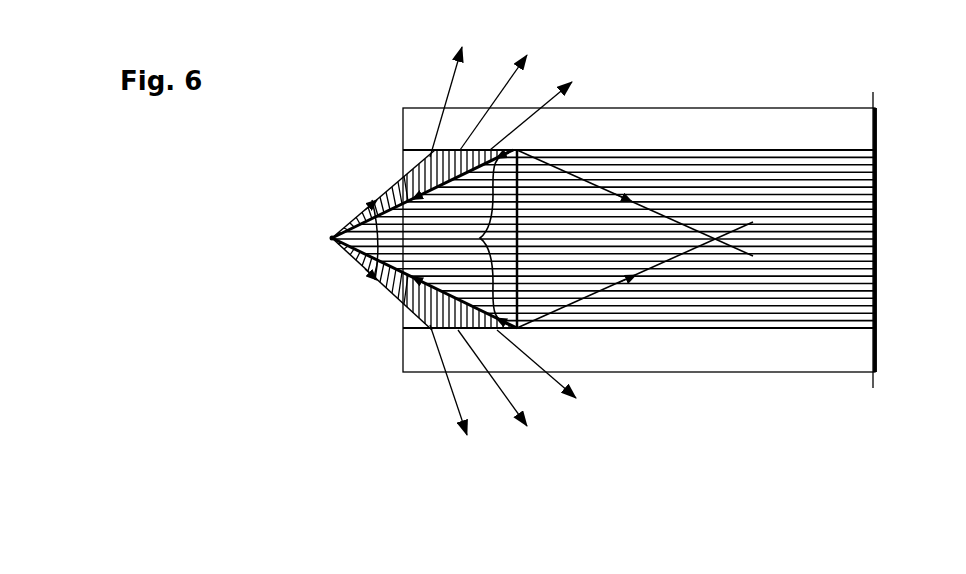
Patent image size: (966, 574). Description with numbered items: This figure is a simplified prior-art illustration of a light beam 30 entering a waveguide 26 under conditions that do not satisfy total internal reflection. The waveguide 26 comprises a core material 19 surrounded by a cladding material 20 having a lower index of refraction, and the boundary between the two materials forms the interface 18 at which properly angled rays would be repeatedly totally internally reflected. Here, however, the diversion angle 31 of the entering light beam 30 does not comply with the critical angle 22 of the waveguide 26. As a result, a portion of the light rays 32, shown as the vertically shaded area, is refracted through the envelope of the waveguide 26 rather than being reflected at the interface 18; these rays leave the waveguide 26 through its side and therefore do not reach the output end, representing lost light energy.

The interface 18 is at (738, 330).
The core material 19 is at (709, 168).
The cladding material 20 is at (660, 128).
The critical angle 22 is at (488, 238).
The waveguide 26 is at (841, 90).
The light beam 30 is at (331, 237).
The diversion angle 31 is at (340, 246).
The portion of the light rays 32 is at (402, 170).